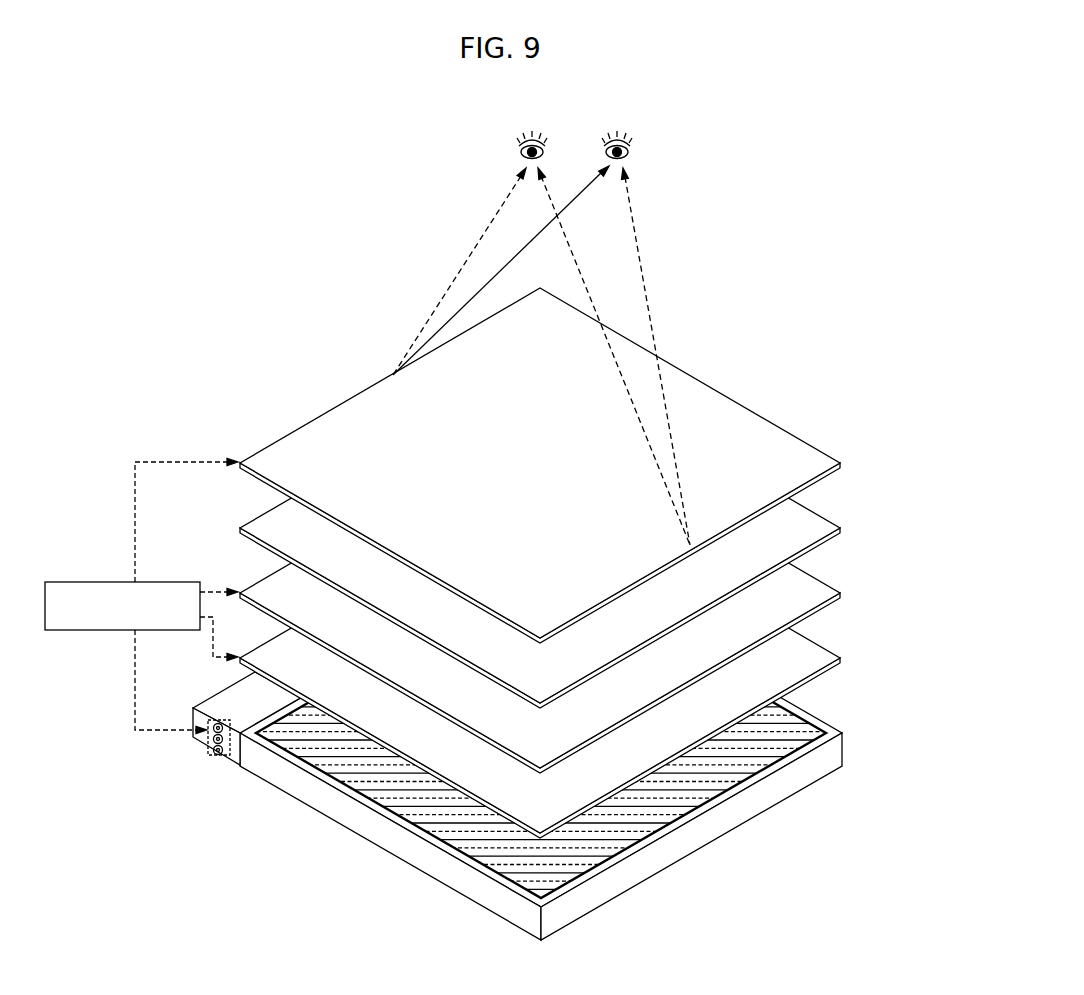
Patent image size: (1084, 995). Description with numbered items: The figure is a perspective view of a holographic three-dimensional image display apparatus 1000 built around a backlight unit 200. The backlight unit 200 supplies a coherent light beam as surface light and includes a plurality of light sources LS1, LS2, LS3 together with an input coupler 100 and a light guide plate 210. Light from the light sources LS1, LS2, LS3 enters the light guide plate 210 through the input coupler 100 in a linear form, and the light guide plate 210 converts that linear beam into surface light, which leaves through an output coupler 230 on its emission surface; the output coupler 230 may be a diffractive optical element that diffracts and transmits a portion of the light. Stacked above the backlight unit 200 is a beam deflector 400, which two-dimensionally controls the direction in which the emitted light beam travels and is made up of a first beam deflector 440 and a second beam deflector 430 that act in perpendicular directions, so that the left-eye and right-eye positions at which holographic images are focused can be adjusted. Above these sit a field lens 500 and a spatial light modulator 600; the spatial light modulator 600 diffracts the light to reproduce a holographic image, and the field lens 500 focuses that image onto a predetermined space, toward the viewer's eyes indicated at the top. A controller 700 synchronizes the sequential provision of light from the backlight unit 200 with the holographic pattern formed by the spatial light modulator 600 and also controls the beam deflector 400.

The three-dimensional image display apparatus 1000 is at (504, 551).
The spatial light modulator 600 is at (842, 463).
The field lens 500 is at (842, 528).
The beam deflector 400 is at (601, 628).
The second beam deflector 430 is at (842, 593).
The first beam deflector 440 is at (842, 658).
The backlight unit 200 is at (541, 765).
The light guide plate 210 is at (685, 842).
The output coupler 230 is at (722, 770).
The input coupler 100 is at (223, 737).
The light source LS1 is at (213, 729).
The light source LS2 is at (216, 741).
The light source LS3 is at (220, 754).
The controller 700 is at (172, 582).